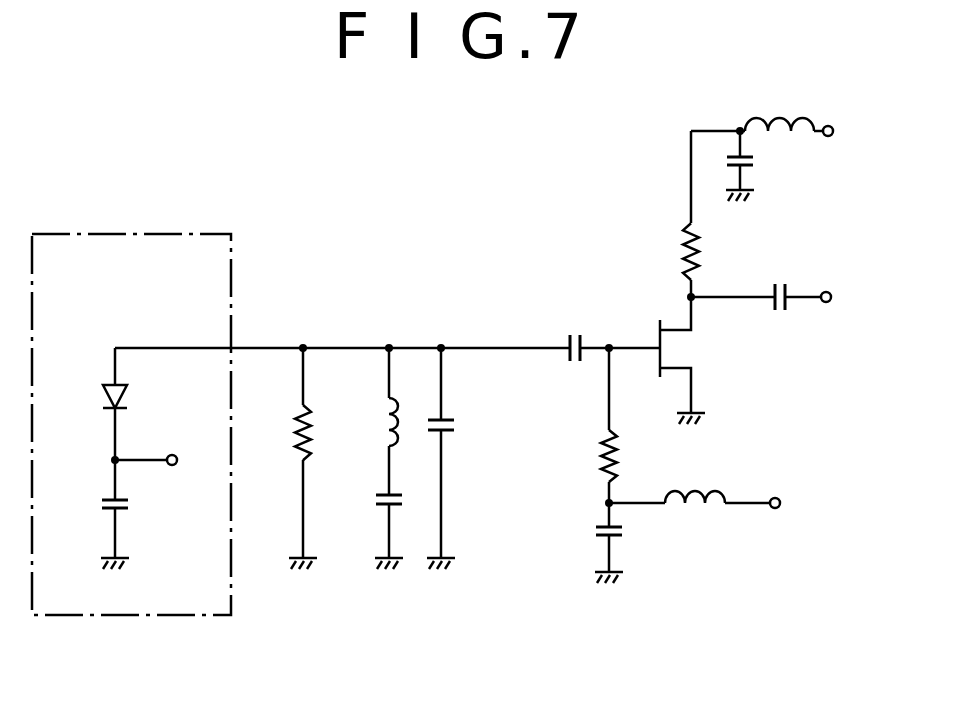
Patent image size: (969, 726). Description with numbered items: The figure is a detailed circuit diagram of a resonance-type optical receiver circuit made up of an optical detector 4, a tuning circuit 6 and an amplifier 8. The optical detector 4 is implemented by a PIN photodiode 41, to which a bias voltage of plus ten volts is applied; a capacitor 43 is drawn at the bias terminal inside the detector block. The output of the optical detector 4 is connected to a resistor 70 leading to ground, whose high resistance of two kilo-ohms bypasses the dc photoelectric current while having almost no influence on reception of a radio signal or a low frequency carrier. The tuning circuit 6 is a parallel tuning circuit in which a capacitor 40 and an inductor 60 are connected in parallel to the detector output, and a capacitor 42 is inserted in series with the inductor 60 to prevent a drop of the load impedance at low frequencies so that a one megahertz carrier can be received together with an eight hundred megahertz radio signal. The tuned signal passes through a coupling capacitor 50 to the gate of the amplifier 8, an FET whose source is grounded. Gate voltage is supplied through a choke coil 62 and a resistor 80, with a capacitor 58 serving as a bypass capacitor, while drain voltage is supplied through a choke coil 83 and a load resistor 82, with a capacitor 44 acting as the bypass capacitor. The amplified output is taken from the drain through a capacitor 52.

The optical detector 4 is at (206, 232).
The PIN photodiode 41 is at (104, 392).
The bypass capacitor 43 is at (128, 505).
The resistor 70 is at (292, 432).
The tuning circuit 6 is at (473, 303).
The inductor 60 is at (378, 421).
The capacitor 42 is at (378, 501).
The capacitor 40 is at (455, 433).
The coupling capacitor 50 is at (573, 335).
The amplifier 8 is at (676, 320).
The output coupling capacitor 52 is at (777, 314).
The load resistor 82 is at (705, 246).
The capacitor 44 is at (757, 162).
The choke coil 83 is at (779, 119).
The gate bias resistor 80 is at (600, 441).
The capacitor 58 is at (625, 532).
The choke coil 62 is at (719, 508).